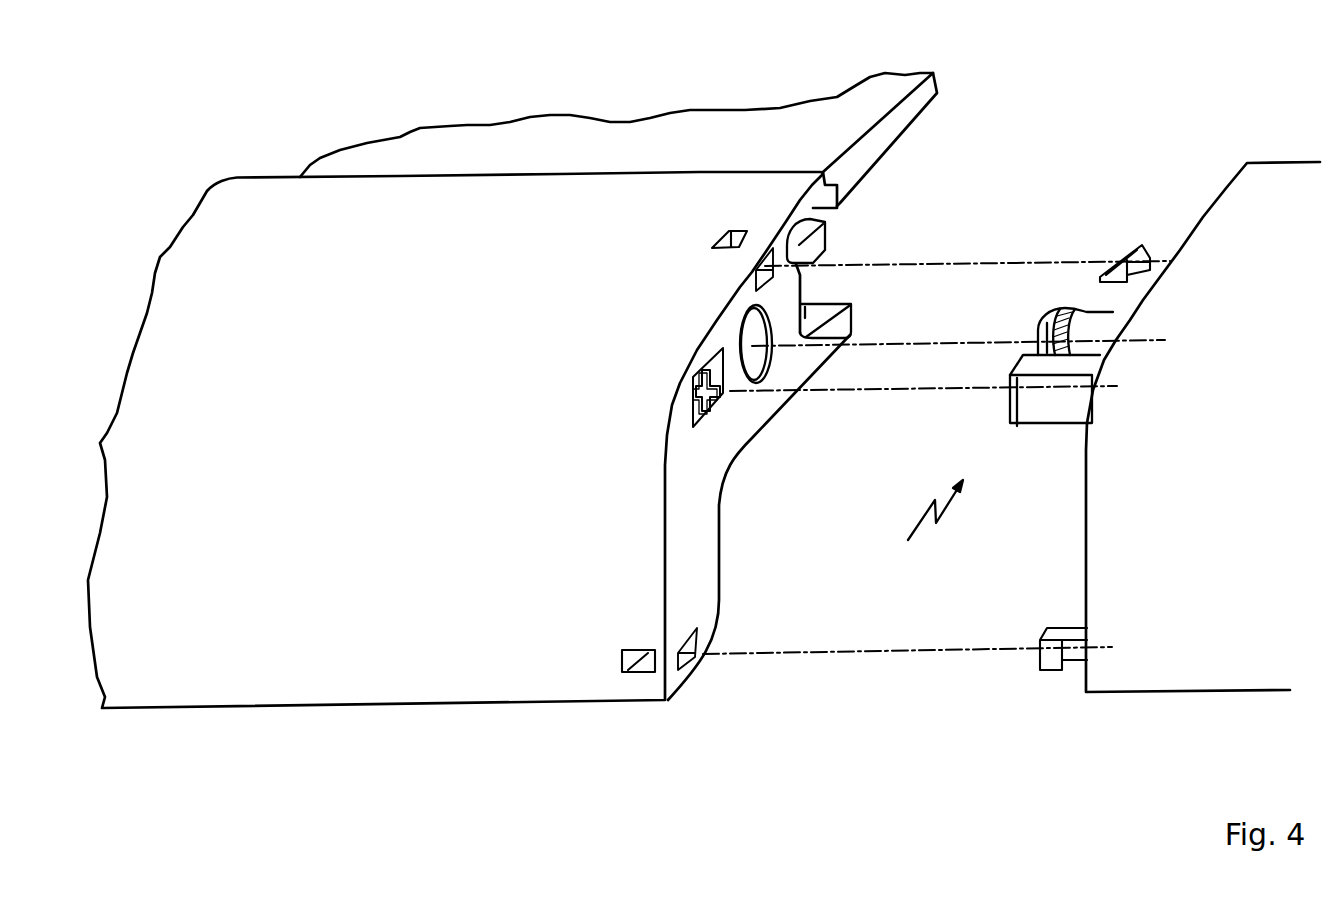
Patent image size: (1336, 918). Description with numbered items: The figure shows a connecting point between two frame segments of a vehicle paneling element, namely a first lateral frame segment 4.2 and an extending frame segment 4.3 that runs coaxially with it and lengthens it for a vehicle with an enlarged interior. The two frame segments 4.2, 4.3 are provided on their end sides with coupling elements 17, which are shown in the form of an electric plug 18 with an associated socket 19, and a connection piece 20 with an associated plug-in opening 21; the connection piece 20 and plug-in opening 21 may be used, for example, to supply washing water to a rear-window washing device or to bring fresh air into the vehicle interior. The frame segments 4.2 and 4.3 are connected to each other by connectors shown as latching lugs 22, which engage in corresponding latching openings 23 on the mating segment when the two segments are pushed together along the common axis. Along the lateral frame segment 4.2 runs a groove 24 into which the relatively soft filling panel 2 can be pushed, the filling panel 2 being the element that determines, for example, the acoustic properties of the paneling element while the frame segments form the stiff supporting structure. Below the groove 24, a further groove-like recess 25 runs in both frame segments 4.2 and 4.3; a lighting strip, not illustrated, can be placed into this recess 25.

The filling panel 2 is at (835, 127).
The lateral frame segment 4.2 is at (440, 660).
The extending frame segment 4.3 is at (1207, 645).
The coupling elements 17 is at (923, 527).
The electric plug 18 is at (1045, 398).
The socket 19 is at (692, 400).
The connection piece 20 is at (1048, 314).
The plug-in opening 21 is at (768, 367).
The latching lugs 22 is at (1121, 250).
The latching openings 23 is at (724, 233).
The groove 24 is at (806, 226).
The groove-like recess 25 is at (812, 305).